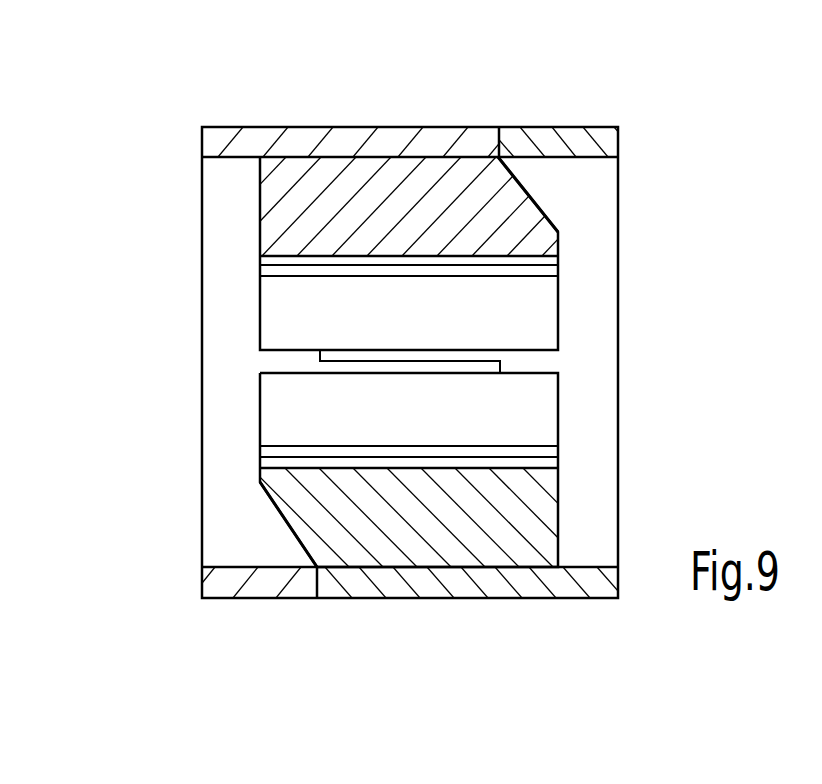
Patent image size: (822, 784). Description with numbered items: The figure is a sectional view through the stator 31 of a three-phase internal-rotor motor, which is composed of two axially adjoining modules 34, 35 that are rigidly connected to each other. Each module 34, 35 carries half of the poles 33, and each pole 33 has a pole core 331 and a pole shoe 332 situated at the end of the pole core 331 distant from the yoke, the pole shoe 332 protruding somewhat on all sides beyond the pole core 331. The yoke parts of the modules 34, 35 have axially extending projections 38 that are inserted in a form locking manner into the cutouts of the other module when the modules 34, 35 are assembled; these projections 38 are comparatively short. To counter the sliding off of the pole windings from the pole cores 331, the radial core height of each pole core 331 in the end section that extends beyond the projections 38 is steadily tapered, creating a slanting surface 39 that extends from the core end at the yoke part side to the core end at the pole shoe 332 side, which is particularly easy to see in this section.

The stator 31 is at (505, 118).
The pole 33 is at (246, 207).
The module 34 is at (309, 122).
The module 35 is at (578, 138).
The projection 38 is at (443, 138).
The slanting surface 39 is at (537, 202).
The pole core 331 is at (457, 222).
The pole shoe 332 is at (543, 258).